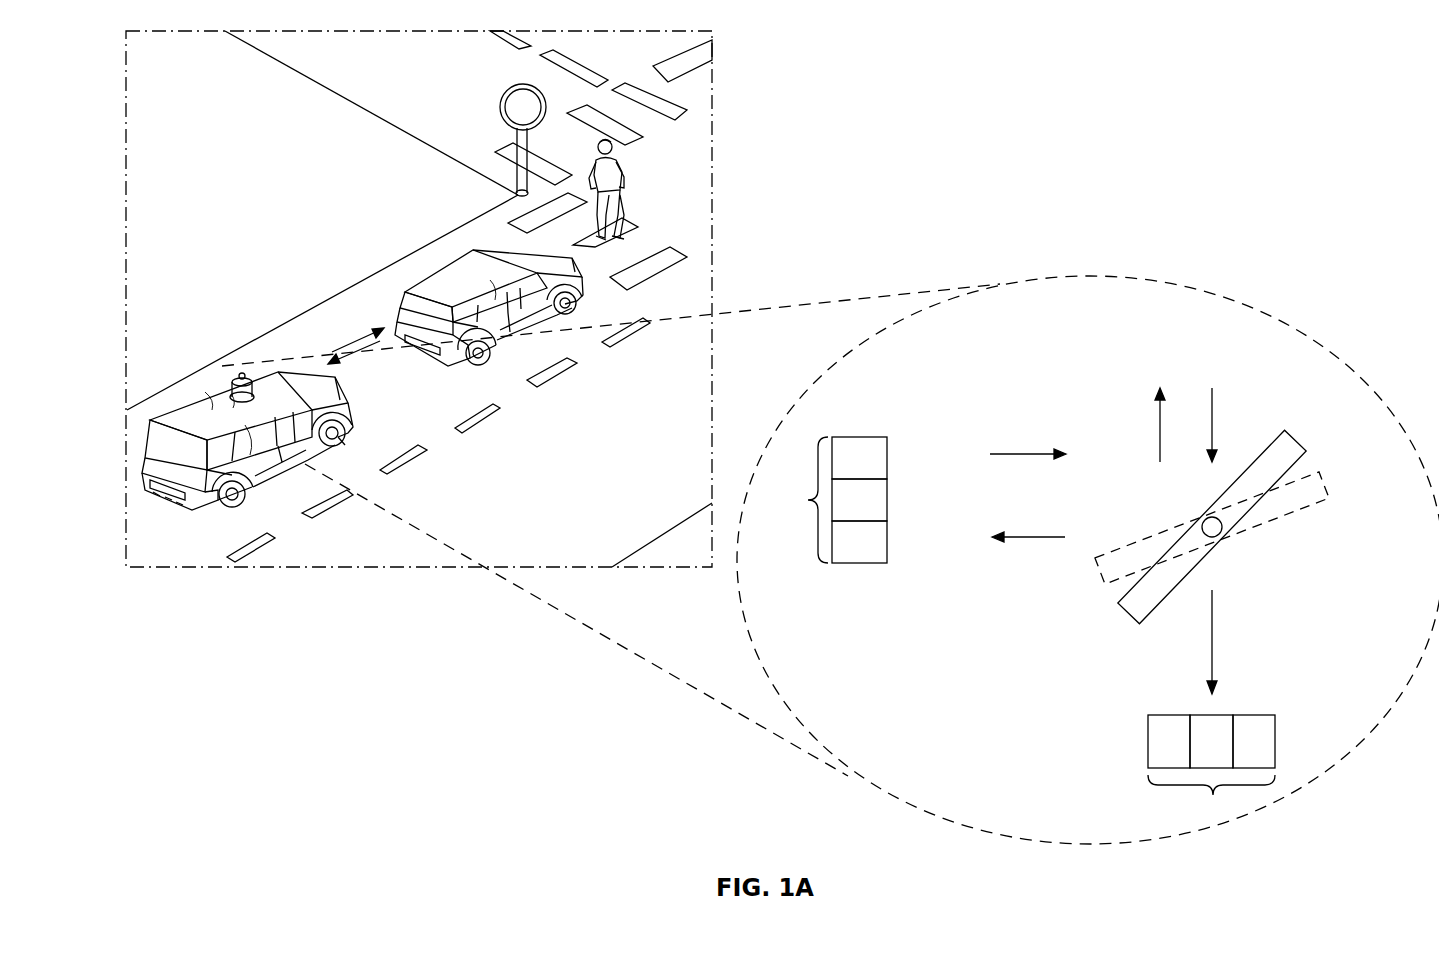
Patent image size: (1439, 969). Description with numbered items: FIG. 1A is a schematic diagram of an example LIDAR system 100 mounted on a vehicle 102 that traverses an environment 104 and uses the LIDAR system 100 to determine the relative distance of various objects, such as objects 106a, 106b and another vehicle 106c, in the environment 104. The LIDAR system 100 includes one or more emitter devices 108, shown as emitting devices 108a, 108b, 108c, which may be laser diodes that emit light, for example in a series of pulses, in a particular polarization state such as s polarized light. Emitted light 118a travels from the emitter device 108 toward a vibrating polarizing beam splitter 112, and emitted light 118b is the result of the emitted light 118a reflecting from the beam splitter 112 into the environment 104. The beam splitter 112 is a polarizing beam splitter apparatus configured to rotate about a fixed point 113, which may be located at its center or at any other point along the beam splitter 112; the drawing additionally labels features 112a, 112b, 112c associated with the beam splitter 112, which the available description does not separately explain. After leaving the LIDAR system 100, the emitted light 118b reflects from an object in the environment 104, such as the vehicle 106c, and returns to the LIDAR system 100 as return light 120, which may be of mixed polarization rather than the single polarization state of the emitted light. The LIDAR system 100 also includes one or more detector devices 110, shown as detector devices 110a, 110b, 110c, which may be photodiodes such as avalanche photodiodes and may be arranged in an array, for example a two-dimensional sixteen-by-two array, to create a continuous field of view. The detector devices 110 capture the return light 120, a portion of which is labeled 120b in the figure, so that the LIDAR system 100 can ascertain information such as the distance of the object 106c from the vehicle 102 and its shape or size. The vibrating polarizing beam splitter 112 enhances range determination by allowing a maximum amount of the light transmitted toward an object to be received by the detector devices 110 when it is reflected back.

The LIDAR system 100 is at (754, 560).
The vehicle 102 is at (145, 455).
The environment 104 is at (678, 64).
The pedestrian object 106a is at (617, 153).
The stop sign object 106b is at (503, 98).
The vehicle 106c is at (464, 280).
The emitter device 108 is at (872, 503).
The emitting device 108a is at (890, 458).
The emitting device 108b is at (890, 493).
The emitting device 108c is at (890, 543).
The detector device 110 is at (1205, 736).
The detector device 110a is at (1147, 742).
The detector device 110b is at (1193, 714).
The detector device 110c is at (1278, 732).
The vibrating polarizing beam splitter 112 is at (1224, 506).
The mirror first position 112a is at (1128, 617).
The mirror second position 112b is at (1106, 583).
The mirror rotation range 112c is at (1322, 475).
The fixed point 113 is at (1205, 518).
The emitted light 118a is at (1032, 452).
The emitted light 118b is at (343, 350).
The return light 120 is at (350, 362).
The received light directed to receivers 120b is at (1216, 628).